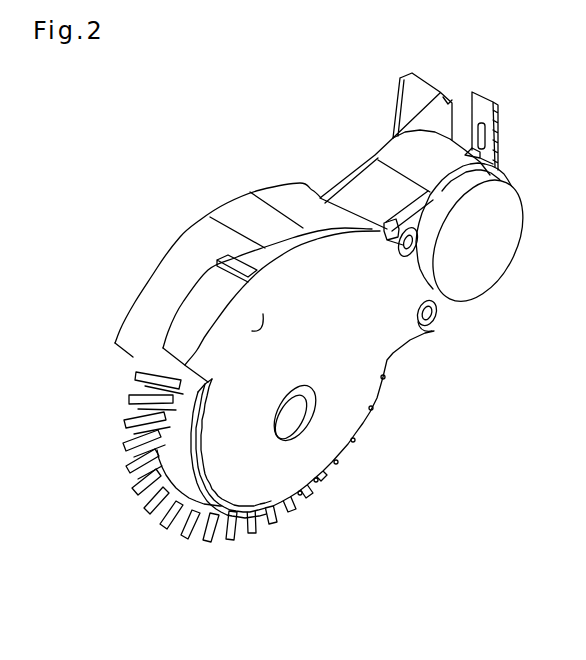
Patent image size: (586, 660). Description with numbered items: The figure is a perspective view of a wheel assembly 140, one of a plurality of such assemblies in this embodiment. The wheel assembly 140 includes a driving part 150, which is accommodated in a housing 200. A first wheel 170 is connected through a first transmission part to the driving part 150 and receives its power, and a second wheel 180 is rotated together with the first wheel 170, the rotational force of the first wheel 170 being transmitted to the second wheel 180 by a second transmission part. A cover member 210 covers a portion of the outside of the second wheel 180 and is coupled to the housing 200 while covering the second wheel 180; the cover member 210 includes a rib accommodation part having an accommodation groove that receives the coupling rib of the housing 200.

The wheel assembly 140 is at (327, 161).
The driving part 150 is at (478, 275).
The first wheel 170 is at (127, 418).
The second wheel 180 is at (230, 548).
The housing 200 is at (239, 210).
The cover member 210 is at (252, 331).